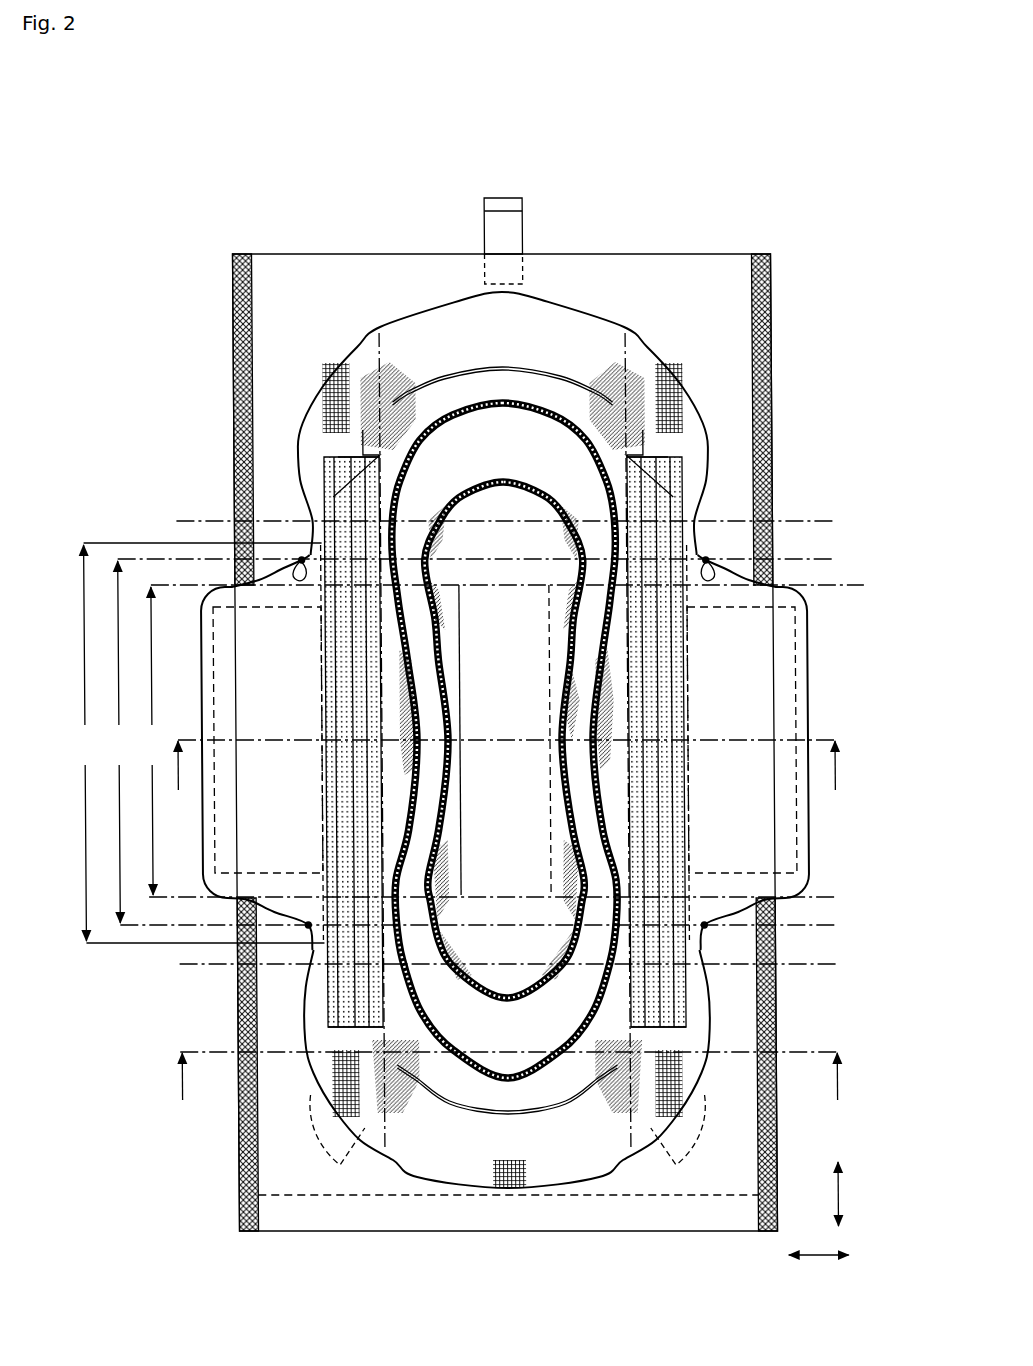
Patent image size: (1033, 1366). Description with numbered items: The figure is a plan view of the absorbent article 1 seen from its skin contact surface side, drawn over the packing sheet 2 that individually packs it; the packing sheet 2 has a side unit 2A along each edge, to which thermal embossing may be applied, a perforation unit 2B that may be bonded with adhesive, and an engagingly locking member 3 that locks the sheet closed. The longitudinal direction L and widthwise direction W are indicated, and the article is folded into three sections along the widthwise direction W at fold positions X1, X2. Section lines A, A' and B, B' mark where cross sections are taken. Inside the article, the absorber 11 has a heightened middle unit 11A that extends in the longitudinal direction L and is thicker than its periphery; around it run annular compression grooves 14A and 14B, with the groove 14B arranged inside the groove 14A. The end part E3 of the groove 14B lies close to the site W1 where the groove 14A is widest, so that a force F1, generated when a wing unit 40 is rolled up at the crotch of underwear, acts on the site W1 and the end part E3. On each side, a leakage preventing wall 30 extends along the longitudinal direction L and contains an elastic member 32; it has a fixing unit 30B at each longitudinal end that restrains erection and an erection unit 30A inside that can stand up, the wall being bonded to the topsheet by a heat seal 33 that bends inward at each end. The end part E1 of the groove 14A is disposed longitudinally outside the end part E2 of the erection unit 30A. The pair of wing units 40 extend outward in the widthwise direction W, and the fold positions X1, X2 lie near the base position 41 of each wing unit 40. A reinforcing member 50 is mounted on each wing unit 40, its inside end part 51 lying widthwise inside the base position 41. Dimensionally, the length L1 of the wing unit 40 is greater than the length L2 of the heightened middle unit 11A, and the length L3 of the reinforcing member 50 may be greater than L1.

The absorbent article 1 is at (708, 182).
The packing sheet 2 is at (706, 283).
The side unit 2A is at (246, 254).
The perforation unit 2B is at (520, 1232).
The engagingly locking member 3 is at (512, 230).
The absorber 11 is at (568, 403).
The heightened middle unit 11A is at (600, 665).
The compression groove 14A is at (534, 400).
The compression groove 14B is at (458, 430).
The leakage preventing wall 30 is at (676, 357).
The erection unit 30A is at (340, 1012).
The fixing unit 30B is at (367, 362).
The elastic member 32 is at (335, 1165).
The heat seal 33 is at (333, 473).
The wing unit 40 is at (811, 633).
The base position 41 is at (300, 572).
The reinforcing member 50 is at (235, 836).
The inside end part 51 is at (322, 790).
The end part E1 is at (490, 402).
The end part E2 is at (378, 457).
The end part E3 is at (503, 480).
The force F1 is at (383, 500).
The site W1 is at (427, 543).
The fold position X1 is at (487, 521).
The fold position X2 is at (490, 964).
The dimension L1 is at (464, 742).
The dimension L2 is at (495, 741).
The dimension L3 is at (189, 743).
The section line A is at (502, 780).
The section line A' is at (840, 781).
The section line B is at (505, 1091).
The section line B' is at (843, 1091).
The longitudinal direction L is at (853, 1194).
The widthwise direction W is at (819, 1275).